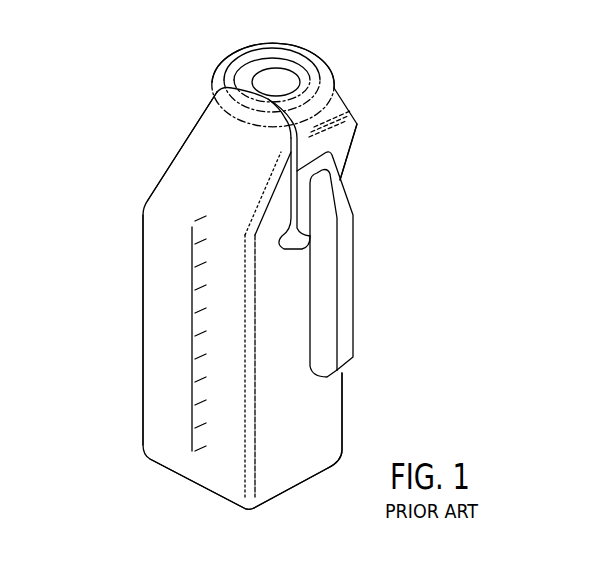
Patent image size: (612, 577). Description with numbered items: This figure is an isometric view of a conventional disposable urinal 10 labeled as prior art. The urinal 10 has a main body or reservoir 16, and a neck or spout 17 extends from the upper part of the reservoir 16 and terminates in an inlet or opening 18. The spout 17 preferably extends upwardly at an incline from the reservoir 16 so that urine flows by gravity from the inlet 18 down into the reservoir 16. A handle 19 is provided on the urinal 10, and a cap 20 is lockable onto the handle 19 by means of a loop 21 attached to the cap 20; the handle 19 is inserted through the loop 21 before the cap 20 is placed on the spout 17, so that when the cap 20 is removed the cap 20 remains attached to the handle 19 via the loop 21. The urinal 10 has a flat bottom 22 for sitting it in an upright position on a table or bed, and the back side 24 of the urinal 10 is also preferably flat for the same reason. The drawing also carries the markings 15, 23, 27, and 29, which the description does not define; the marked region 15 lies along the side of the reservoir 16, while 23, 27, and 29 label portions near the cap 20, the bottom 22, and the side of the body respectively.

The disposable urinal 10 is at (103, 262).
The front side wall 15 is at (168, 154).
The main body 16 is at (158, 332).
The neck 17 is at (216, 125).
The inlet 18 is at (251, 97).
The handle 19 is at (357, 278).
The cap 20 is at (347, 86).
The loop 21 is at (346, 168).
The flat bottom 22 is at (311, 38).
The ridges 23 is at (338, 130).
The back side 24 is at (144, 390).
The bottom 27 is at (233, 443).
The rear side wall 29 is at (308, 420).